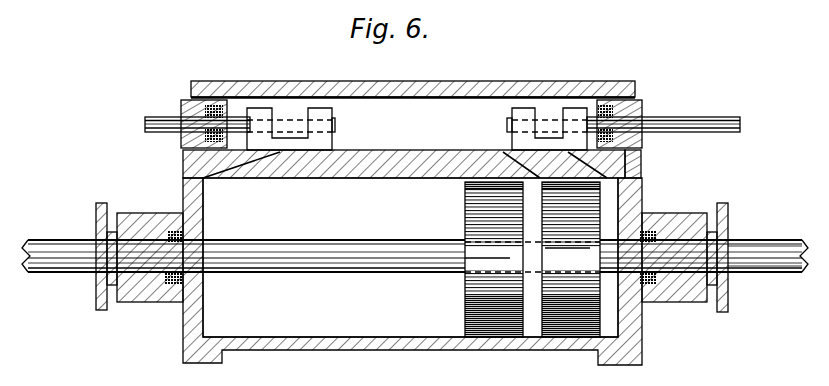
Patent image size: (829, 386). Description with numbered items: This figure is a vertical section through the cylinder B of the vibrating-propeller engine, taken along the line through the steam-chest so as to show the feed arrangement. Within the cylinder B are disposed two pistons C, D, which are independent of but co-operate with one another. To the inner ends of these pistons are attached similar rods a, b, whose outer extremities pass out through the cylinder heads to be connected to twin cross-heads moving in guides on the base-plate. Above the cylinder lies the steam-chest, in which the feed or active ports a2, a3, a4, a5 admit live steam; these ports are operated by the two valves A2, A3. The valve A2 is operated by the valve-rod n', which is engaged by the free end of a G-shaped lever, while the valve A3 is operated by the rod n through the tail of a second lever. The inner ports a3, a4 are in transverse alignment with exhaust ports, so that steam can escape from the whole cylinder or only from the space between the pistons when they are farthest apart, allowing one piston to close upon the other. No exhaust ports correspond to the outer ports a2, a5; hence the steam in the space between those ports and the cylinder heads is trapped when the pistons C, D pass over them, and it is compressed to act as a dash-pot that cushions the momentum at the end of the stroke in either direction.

The valve-rod n' is at (197, 121).
The rod n is at (663, 124).
The valve A2 is at (308, 129).
The valve A3 is at (547, 125).
The feed port a2 is at (412, 271).
The feed port a3 is at (413, 146).
The feed port a4 is at (404, 152).
The feed port a5 is at (647, 165).
The cylinder B is at (410, 257).
The rod a is at (412, 256).
The piston C is at (494, 259).
The piston D is at (571, 259).
The rod b is at (768, 255).